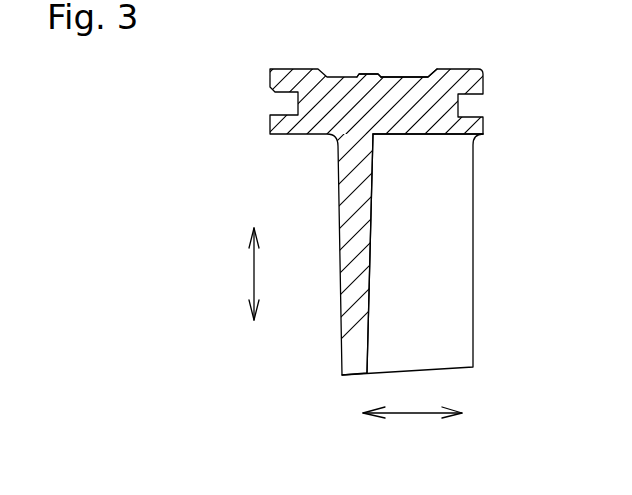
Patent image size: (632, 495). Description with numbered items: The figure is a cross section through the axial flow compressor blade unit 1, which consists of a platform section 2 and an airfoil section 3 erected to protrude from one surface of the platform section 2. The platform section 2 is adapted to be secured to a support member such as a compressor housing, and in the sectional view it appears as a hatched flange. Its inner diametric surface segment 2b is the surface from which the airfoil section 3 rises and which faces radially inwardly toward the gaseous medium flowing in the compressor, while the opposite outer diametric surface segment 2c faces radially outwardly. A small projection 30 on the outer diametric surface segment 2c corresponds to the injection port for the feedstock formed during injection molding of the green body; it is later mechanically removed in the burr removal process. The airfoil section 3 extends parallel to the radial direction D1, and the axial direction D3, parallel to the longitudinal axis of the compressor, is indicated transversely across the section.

The axial flow compressor blade unit 1 is at (326, 194).
The platform section 2 is at (326, 194).
The inner diametric surface segment 2b is at (413, 134).
The outer diametric surface segment 2c is at (407, 77).
The projection 30 is at (363, 77).
The airfoil section 3 is at (448, 263).
The radial direction D1 is at (254, 272).
The axial direction D3 is at (412, 413).